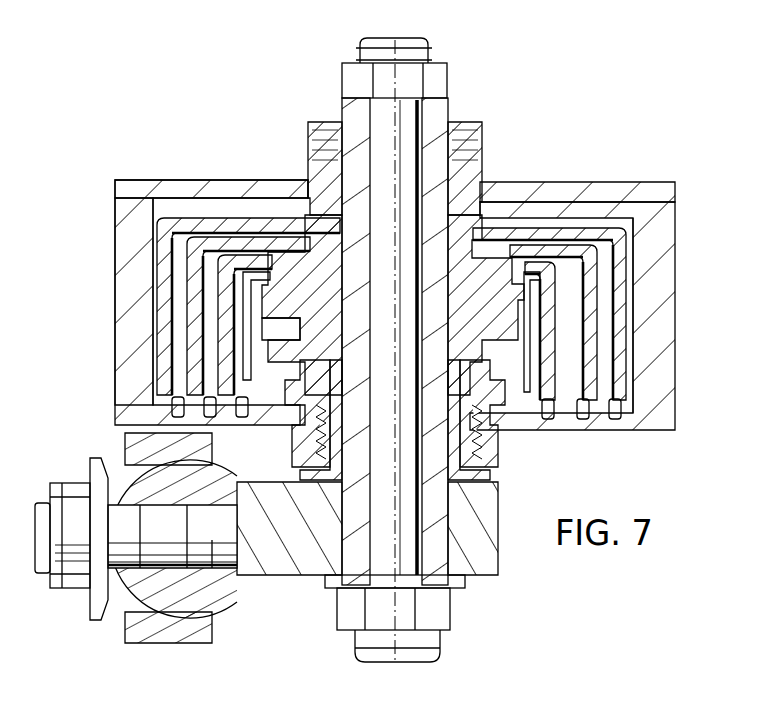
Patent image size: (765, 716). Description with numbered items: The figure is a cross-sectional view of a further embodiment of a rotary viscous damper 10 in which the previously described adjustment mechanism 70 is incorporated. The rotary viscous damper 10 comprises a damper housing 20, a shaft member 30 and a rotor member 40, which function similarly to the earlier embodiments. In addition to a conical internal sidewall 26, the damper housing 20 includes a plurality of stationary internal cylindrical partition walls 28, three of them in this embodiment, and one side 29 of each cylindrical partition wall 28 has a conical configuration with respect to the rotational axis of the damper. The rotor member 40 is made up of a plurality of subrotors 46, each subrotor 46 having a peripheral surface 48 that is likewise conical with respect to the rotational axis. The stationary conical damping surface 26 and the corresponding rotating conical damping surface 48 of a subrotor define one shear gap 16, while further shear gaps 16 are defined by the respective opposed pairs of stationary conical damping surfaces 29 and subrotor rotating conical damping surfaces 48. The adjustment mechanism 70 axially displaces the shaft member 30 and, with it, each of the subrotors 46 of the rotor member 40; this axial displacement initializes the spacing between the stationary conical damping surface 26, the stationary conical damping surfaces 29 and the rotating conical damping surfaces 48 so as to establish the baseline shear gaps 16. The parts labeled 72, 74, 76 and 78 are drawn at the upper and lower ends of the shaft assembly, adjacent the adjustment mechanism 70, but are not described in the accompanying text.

The rotary viscous damper 10 is at (606, 168).
The shear gap 16 is at (157, 305).
The damper housing 20 is at (155, 178).
The conical internal sidewall 26 is at (632, 214).
The internal cylindrical partition wall 28 is at (585, 420).
The conical side of partition wall 29 is at (645, 313).
The shaft member 30 is at (455, 500).
The rotor member 40 is at (208, 215).
The subrotor 46 is at (465, 320).
The peripheral surface of subrotor 48 is at (283, 341).
The adjustment mechanism 70 is at (465, 93).
The upper flange 72 is at (325, 148).
The upper flange 74 is at (470, 125).
The lower flange spring 76 is at (485, 430).
The lower flange spring 78 is at (302, 455).